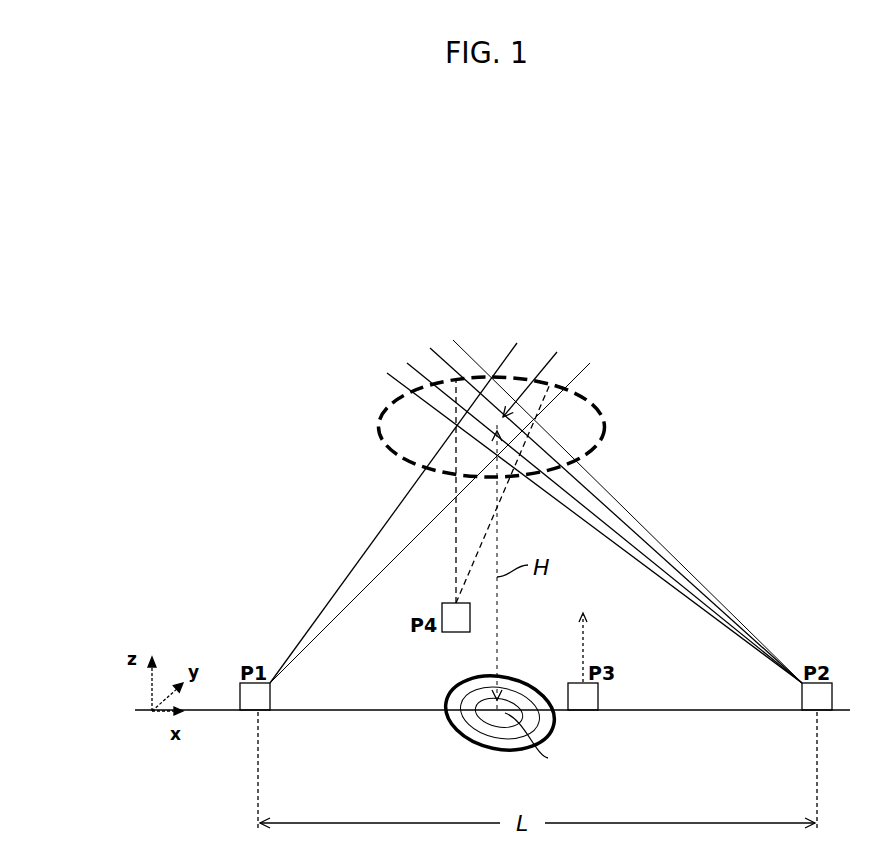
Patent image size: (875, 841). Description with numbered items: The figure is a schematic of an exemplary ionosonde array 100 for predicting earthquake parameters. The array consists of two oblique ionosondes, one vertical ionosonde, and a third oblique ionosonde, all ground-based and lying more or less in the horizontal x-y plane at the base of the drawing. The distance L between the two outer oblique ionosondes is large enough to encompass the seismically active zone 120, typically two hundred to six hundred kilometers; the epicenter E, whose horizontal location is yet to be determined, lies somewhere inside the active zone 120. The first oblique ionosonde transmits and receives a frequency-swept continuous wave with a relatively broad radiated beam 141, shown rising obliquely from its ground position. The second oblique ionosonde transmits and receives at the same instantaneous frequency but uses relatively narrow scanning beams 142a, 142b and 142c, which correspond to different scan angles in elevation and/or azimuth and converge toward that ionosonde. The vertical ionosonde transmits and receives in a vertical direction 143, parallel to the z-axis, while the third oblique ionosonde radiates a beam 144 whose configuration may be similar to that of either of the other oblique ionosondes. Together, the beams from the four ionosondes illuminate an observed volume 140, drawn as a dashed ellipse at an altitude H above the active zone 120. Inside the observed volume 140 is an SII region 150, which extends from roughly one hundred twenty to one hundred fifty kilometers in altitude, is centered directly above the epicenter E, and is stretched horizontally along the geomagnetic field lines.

The ionosonde array 100 is at (368, 267).
The seismically active zone 120 is at (480, 750).
The observed volume 140 is at (601, 420).
The radiated beam 141 is at (347, 590).
The narrow scanning beam 142a is at (627, 548).
The narrow scanning beam 142b is at (610, 517).
The narrow scanning beam 142c is at (603, 493).
The vertical direction 143 is at (584, 635).
The beam 144 is at (482, 503).
The SII region 150 is at (555, 368).